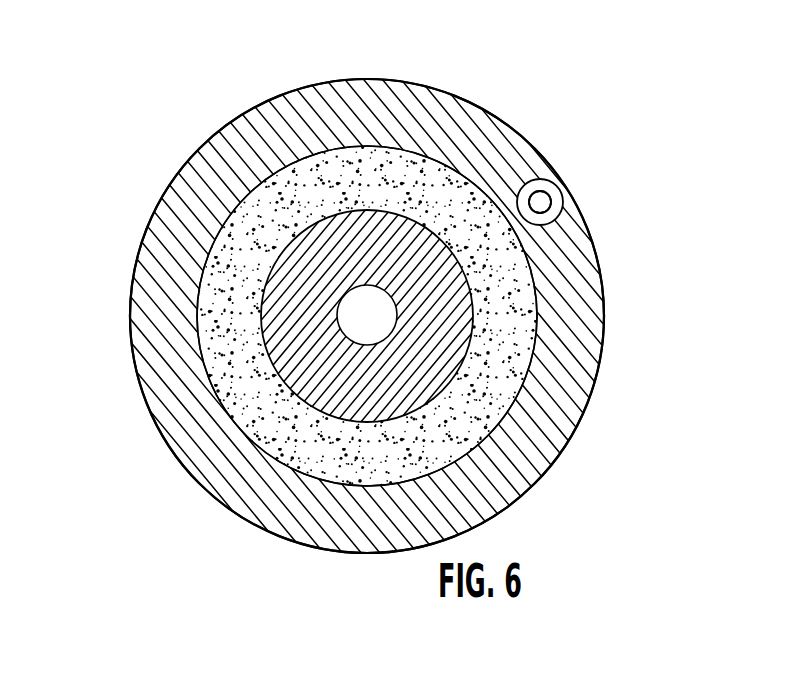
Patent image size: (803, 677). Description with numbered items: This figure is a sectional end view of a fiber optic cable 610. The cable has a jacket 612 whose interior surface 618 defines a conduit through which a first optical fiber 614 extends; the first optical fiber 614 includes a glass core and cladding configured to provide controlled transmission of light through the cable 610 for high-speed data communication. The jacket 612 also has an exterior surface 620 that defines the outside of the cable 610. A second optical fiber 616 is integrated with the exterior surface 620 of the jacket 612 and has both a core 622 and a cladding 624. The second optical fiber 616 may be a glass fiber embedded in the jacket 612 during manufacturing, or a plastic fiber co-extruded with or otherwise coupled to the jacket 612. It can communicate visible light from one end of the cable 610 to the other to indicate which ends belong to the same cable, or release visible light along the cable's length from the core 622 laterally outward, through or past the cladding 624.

The fiber optic cable 610 is at (401, 289).
The jacket 612 is at (328, 112).
The first optical fiber 614 is at (318, 352).
The second optical fiber 616 is at (540, 202).
The interior surface 618 is at (230, 380).
The exterior surface 620 is at (132, 392).
The core 622 is at (537, 191).
The cladding 624 is at (523, 188).